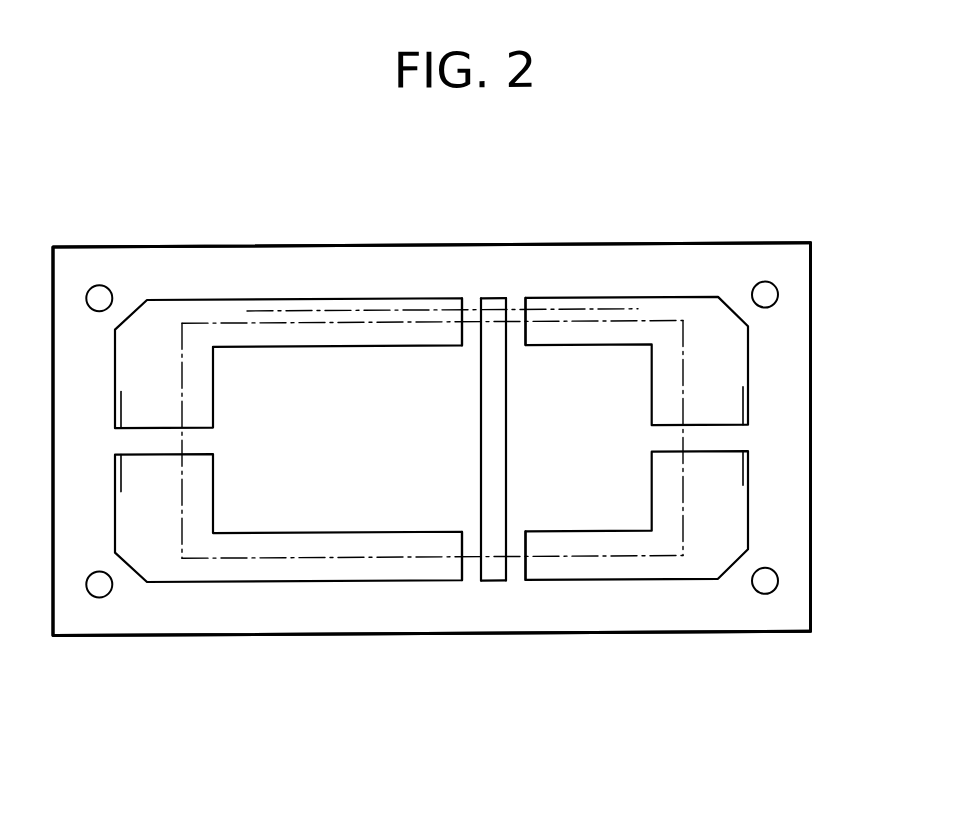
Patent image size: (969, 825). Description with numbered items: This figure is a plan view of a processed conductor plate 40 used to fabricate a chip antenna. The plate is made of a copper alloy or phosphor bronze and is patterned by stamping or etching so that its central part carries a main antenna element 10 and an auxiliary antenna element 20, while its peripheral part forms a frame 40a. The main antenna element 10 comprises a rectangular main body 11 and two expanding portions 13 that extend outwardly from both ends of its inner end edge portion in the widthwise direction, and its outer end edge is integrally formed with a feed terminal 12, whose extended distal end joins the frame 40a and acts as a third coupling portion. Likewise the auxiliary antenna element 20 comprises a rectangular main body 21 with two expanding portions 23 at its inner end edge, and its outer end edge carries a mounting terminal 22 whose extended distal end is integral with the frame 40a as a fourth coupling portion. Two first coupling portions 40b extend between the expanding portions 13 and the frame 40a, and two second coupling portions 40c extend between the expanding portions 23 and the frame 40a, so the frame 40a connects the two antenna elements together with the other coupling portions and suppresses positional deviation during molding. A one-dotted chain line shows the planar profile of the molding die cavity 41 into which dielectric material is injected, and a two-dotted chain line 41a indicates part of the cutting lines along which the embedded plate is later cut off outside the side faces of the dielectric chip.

The main antenna element 10 is at (293, 521).
The main body 11 is at (337, 507).
The feed terminal 12 is at (153, 438).
The expanding portions 13 is at (472, 542).
The auxiliary antenna element 20 is at (692, 516).
The main body 21 is at (628, 501).
The mounting terminal 22 is at (717, 440).
The expanding portions 23 is at (517, 545).
The processed conductor plate 40 is at (745, 247).
The frame 40a is at (622, 265).
The first coupling portions 40b is at (470, 304).
The second coupling portions 40c is at (515, 304).
The cavity 41 is at (655, 323).
The cutting lines 41a is at (297, 313).